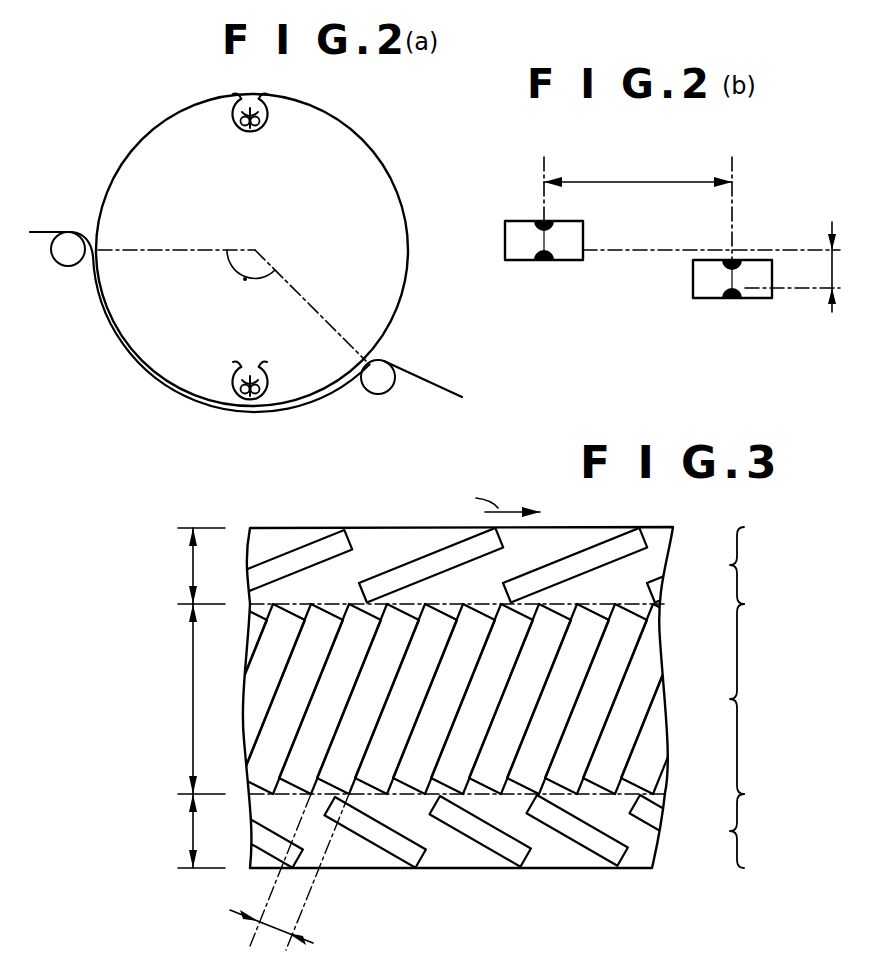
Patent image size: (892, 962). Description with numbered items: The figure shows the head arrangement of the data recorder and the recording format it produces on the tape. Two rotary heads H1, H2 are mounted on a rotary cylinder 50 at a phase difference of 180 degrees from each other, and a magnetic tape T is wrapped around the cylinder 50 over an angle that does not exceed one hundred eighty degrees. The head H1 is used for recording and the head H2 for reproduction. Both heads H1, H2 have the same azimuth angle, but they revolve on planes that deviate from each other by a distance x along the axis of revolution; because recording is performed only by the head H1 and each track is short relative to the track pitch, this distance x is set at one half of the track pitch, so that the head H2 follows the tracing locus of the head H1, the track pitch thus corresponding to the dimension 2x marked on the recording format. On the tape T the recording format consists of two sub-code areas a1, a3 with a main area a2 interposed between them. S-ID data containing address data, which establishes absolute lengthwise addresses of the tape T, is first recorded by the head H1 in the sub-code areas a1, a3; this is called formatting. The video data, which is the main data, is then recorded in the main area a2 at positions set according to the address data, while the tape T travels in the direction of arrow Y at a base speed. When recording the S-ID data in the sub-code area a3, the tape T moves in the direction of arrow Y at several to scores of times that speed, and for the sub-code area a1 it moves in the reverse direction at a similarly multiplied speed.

In FIG. 2A, the rotary cylinder 50 is at (384, 163).
In FIG. 2A, the rotary head H1 is at (276, 112).
In FIG. 2B, the rotary head H1 is at (518, 262).
In FIG. 2A, the rotary head H2 is at (233, 378).
In FIG. 2B, the rotary head H2 is at (708, 300).
In FIG. 2A, the magnetic tape T is at (442, 382).
In FIG. 3, the magnetic tape T is at (478, 676).
In FIG. 3, the arrow Y (tape travel direction) Y is at (494, 503).
In FIG. 3, the sub-code area a1 is at (499, 566).
In FIG. 3, the main area a2 is at (444, 699).
In FIG. 3, the sub-code area a3 is at (466, 831).
In FIG. 2B, the distance X x is at (717, 267).
In FIG. 3, the track offset 2x is at (289, 872).
In FIG. 2B, the phase difference of 180 degrees 180 is at (638, 168).